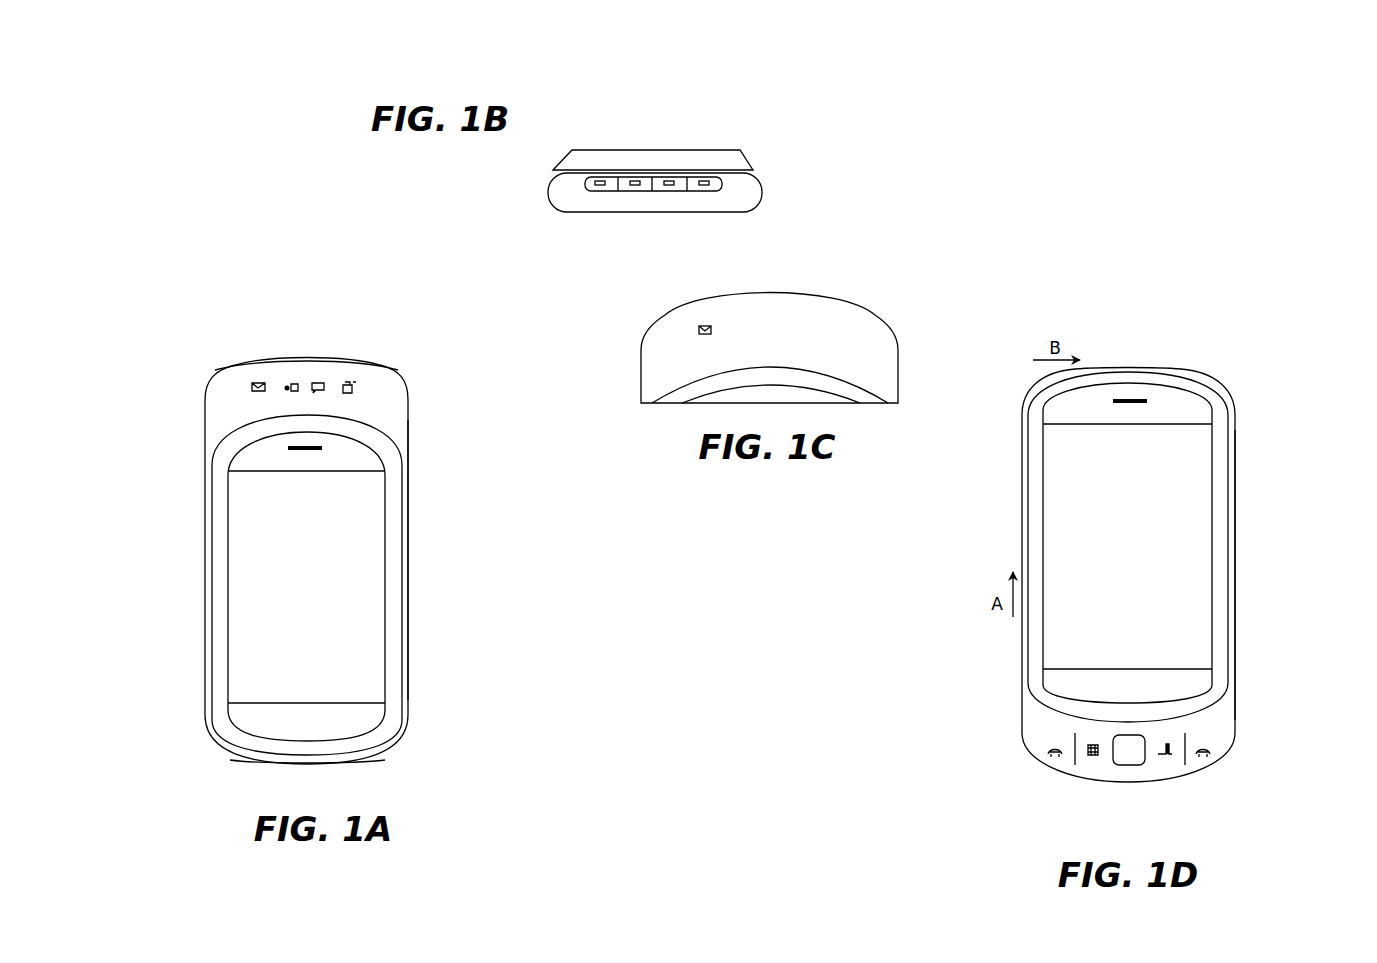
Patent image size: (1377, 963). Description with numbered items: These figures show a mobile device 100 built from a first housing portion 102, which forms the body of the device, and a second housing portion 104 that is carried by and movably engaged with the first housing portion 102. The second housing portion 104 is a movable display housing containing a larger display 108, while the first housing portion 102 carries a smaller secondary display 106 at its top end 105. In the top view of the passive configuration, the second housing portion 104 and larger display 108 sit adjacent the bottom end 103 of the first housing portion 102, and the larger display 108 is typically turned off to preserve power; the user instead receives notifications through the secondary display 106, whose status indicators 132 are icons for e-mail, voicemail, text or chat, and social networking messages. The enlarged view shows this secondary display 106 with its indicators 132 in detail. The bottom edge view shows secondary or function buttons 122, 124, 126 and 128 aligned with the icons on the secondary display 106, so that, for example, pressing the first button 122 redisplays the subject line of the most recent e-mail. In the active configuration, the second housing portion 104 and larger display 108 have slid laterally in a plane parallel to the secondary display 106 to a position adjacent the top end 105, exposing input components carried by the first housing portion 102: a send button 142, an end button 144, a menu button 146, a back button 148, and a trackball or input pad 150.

In FIG. 1A, the mobile device 100 is at (460, 676).
In FIG. 1B, the mobile device 100 is at (838, 178).
In FIG. 1D, the mobile device 100 is at (1220, 365).
In FIG. 1A, the first housing portion 102 is at (403, 418).
In FIG. 1D, the first housing portion 102 is at (1035, 718).
In FIG. 1A, the bottom end 103 is at (256, 745).
In FIG. 1A, the second housing portion 104 is at (408, 558).
In FIG. 1D, the second housing portion 104 is at (1233, 553).
In FIG. 1A, the top end 105 is at (378, 367).
In FIG. 1B, the top end 105 is at (545, 182).
In FIG. 1C, the top end 105 is at (775, 292).
In FIG. 1D, the top end 105 is at (1128, 369).
In FIG. 1A, the secondary display 106 is at (232, 382).
In FIG. 1B, the secondary display 106 is at (653, 184).
In FIG. 1C, the secondary display 106 is at (852, 322).
In FIG. 1A, the larger display 108 is at (240, 550).
In FIG. 1B, the larger display 108 is at (703, 155).
In FIG. 1D, the larger display 108 is at (1198, 468).
In FIG. 1A, the first function button 122 is at (252, 360).
In FIG. 1B, the first function button 122 is at (703, 188).
In FIG. 1A, the function button 124 is at (303, 353).
In FIG. 1B, the function button 124 is at (672, 180).
In FIG. 1A, the function button 126 is at (318, 388).
In FIG. 1B, the function button 126 is at (635, 188).
In FIG. 1A, the function button 128 is at (349, 387).
In FIG. 1B, the function button 128 is at (603, 180).
In FIG. 1A, the status indicators 132 is at (360, 387).
In FIG. 1D, the send button 142 is at (1040, 762).
In FIG. 1D, the end button 144 is at (1215, 762).
In FIG. 1D, the menu button 146 is at (1093, 765).
In FIG. 1D, the back button 148 is at (1170, 765).
In FIG. 1D, the trackball or input pad 150 is at (1126, 766).